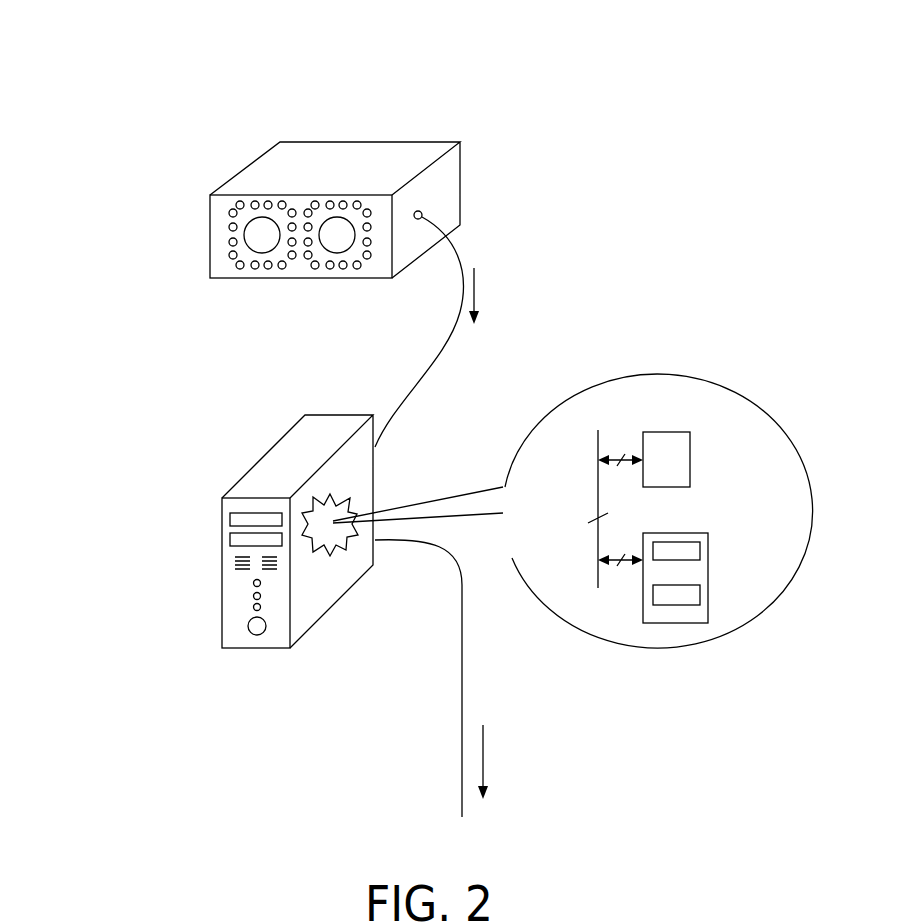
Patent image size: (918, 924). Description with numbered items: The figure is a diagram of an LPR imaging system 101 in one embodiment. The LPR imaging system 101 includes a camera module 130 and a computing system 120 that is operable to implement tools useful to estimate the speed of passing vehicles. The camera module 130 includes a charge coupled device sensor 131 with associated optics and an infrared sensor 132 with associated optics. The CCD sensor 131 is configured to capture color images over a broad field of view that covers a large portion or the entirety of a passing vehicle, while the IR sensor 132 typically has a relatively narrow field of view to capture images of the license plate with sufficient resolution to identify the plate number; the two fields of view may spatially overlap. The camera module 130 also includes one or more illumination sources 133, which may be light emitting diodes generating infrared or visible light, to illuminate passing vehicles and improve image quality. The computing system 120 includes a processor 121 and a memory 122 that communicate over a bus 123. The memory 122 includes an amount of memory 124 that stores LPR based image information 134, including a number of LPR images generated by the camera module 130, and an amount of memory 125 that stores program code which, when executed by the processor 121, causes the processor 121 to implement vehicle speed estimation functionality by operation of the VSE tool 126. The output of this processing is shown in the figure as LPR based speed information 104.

The LPR imaging system 101 is at (166, 62).
The LPR based speed information 104 is at (483, 760).
The computing system 120 is at (283, 531).
The processor 121 is at (690, 460).
The memory 122 is at (674, 566).
The bus 123 is at (598, 487).
The amount of memory 124 is at (700, 551).
The amount of memory 125 is at (700, 597).
The VSE tool 126 is at (352, 540).
The camera module 130 is at (299, 203).
The CCD sensor 131 is at (256, 233).
The IR sensor 132 is at (345, 235).
The illumination sources 133 is at (234, 258).
The LPR based image information 134 is at (474, 287).